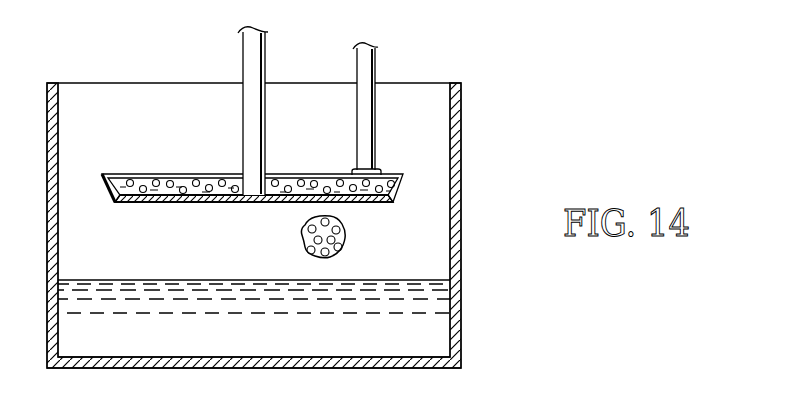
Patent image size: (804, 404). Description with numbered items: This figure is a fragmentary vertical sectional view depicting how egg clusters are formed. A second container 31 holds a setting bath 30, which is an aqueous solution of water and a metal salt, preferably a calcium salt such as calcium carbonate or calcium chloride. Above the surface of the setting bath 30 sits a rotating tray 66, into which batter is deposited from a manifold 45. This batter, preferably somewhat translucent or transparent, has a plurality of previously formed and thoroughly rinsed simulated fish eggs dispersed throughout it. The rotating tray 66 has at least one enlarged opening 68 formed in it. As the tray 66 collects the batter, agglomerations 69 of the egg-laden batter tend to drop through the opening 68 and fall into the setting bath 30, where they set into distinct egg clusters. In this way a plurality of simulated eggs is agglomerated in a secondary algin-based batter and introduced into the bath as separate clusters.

The setting bath 30 is at (422, 337).
The second container 31 is at (452, 147).
The manifold 45 is at (366, 108).
The rotating tray 66 is at (395, 192).
The enlarged opening 68 is at (348, 199).
The agglomerations 69 is at (352, 248).